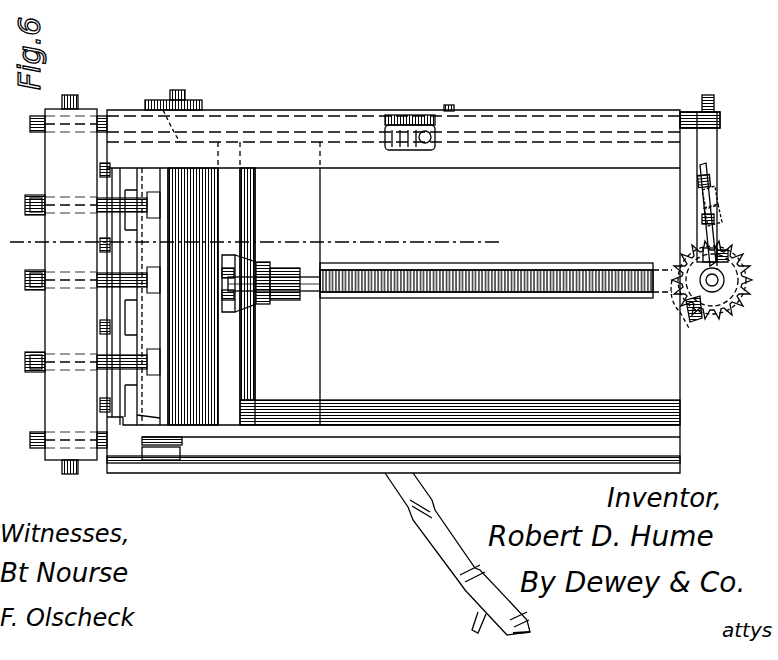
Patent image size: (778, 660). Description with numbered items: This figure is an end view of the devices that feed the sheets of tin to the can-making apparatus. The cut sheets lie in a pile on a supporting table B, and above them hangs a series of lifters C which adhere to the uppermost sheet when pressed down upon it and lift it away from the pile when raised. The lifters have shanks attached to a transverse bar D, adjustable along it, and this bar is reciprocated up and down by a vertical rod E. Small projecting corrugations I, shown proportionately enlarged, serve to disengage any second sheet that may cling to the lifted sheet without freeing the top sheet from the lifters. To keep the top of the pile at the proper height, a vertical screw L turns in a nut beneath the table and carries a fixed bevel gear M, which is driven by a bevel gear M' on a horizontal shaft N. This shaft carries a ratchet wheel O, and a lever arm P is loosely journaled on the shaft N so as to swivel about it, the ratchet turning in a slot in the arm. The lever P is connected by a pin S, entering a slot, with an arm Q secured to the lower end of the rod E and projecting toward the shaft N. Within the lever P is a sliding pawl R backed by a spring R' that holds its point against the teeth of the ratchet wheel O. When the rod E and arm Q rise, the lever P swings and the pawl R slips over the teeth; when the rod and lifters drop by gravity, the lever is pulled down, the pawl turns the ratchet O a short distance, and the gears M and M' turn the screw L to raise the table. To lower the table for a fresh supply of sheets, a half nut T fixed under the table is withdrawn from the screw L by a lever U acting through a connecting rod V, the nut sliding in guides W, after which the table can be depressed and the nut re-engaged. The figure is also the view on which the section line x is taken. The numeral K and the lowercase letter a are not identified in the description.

The vertical rod E is at (30, 122).
The transverse bar D is at (55, 332).
The tie bolt K is at (135, 250).
The lifters C is at (165, 300).
The projecting corrugations I is at (158, 138).
The supporting table B is at (195, 400).
The guides W is at (255, 330).
The lever U is at (345, 298).
The catch a is at (180, 136).
The section line x— x is at (254, 242).
The vertical screw L is at (450, 296).
The half nut T is at (287, 300).
The connecting rod V is at (268, 302).
The arm Q is at (712, 160).
The lever arm P is at (702, 225).
The sliding pawl R is at (697, 181).
The spring R' is at (688, 203).
The pin S is at (720, 250).
The ratchet wheel O is at (745, 290).
The horizontal shaft N is at (722, 292).
The bevel gear M is at (708, 300).
The bevel gear M' is at (707, 326).